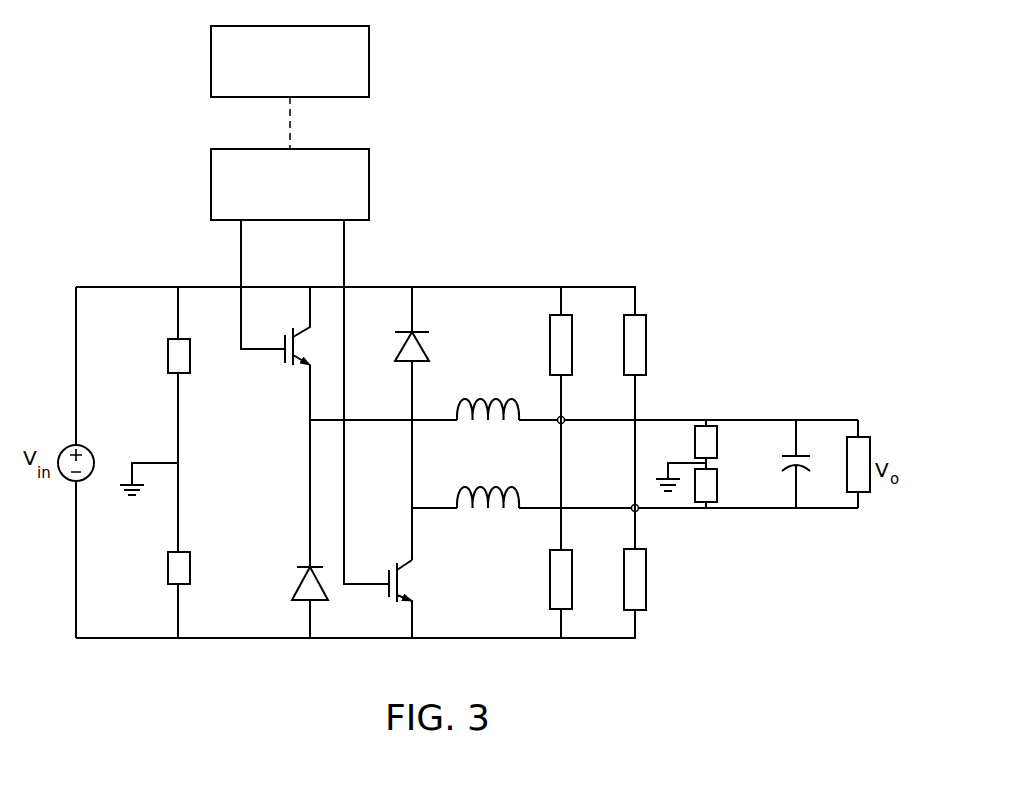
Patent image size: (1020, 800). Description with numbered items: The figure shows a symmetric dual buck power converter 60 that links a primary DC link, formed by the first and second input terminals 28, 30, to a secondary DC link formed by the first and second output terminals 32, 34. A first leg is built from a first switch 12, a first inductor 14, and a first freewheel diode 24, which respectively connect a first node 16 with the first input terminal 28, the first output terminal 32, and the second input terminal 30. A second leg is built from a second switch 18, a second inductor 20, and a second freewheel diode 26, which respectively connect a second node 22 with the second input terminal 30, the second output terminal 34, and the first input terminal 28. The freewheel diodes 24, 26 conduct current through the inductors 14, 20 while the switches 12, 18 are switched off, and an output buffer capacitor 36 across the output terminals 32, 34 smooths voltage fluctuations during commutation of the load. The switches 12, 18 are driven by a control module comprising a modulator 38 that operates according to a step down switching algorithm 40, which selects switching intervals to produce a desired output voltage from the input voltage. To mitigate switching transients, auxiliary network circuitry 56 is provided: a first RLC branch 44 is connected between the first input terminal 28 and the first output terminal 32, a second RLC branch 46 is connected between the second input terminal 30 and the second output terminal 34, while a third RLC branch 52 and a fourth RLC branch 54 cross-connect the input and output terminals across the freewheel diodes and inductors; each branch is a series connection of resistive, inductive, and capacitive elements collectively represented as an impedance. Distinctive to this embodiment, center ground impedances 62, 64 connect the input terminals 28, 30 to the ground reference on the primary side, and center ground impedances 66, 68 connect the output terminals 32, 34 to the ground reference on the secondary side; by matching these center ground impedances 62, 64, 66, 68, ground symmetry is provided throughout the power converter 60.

The first switch 12 is at (298, 373).
The first inductor 14 is at (487, 427).
The first node 16 is at (308, 420).
The second switch 18 is at (416, 579).
The second inductor 20 is at (490, 483).
The second node 22 is at (410, 508).
The first freewheel diode 24 is at (288, 583).
The second freewheel diode 26 is at (431, 350).
The first input terminal 28 is at (74, 286).
The second input terminal 30 is at (74, 637).
The first output terminal 32 is at (858, 418).
The second output terminal 34 is at (858, 512).
The output buffer capacitor 36 is at (767, 462).
The modulator 38 is at (371, 189).
The step down switching algorithm 40 is at (371, 63).
The first RLC branch 44 is at (546, 358).
The second RLC branch 46 is at (672, 576).
The third RLC branch 52 is at (548, 576).
The fourth RLC branch 54 is at (654, 332).
The auxiliary network circuitry 56 is at (586, 283).
The power converter 60 is at (508, 198).
The center ground impedance 62 is at (163, 361).
The center ground impedance 64 is at (163, 563).
The center ground impedance 66 is at (690, 453).
The center ground impedance 68 is at (719, 473).